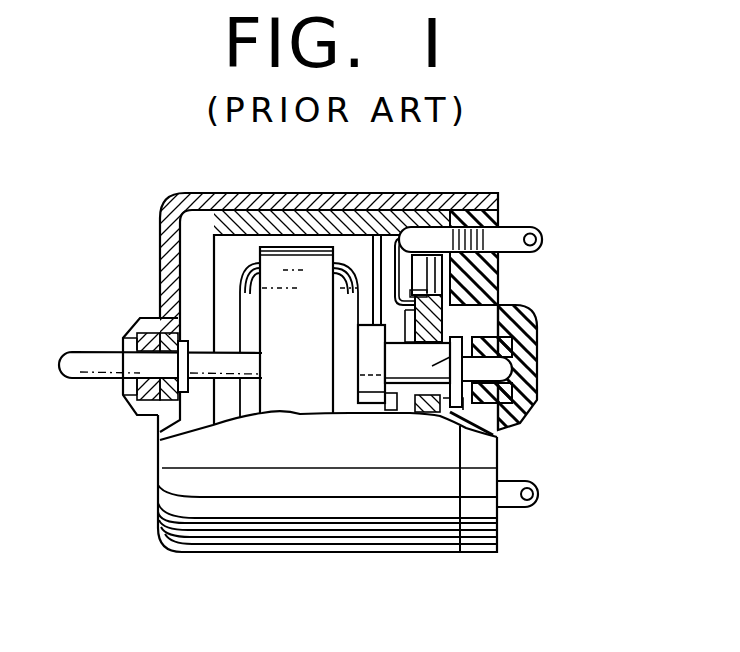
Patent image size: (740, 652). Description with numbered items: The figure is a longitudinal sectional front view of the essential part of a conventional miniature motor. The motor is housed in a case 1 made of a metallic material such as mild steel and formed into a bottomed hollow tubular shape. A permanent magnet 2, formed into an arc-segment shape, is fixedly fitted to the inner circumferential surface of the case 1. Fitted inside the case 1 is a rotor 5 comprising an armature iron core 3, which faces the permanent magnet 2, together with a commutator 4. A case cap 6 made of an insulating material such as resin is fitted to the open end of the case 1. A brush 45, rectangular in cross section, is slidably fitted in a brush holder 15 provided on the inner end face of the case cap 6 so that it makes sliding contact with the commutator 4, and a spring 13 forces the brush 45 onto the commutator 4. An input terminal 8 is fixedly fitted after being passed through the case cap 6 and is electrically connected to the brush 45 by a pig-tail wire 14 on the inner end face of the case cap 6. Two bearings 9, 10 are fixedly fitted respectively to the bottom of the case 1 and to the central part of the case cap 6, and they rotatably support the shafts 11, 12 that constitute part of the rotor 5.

The case 1 is at (194, 193).
The permanent magnet 2 is at (242, 218).
The armature iron core 3 is at (290, 270).
The commutator 4 is at (538, 350).
The rotor 5 is at (229, 259).
The case cap 6 is at (498, 200).
The input terminal 8 is at (545, 239).
The bearing 9 is at (148, 322).
The bearing 10 is at (542, 400).
The shaft 11 is at (72, 379).
The shaft 12 is at (540, 391).
The spring 13 is at (498, 282).
The pig-tail wire 14 is at (388, 255).
The brush holder 15 is at (372, 323).
The brush 45 is at (498, 312).